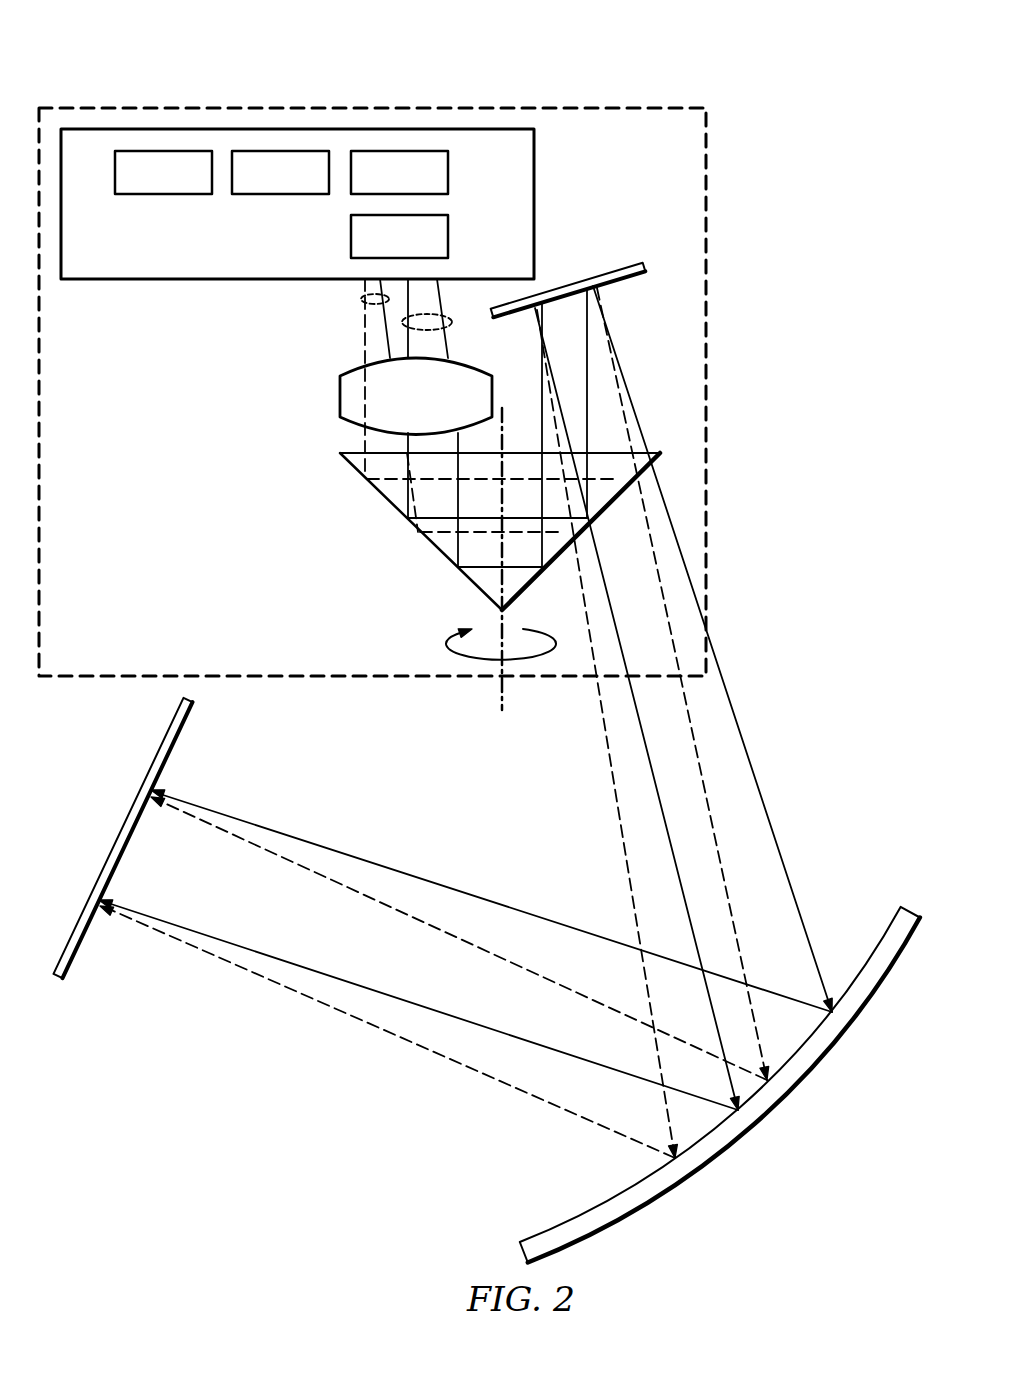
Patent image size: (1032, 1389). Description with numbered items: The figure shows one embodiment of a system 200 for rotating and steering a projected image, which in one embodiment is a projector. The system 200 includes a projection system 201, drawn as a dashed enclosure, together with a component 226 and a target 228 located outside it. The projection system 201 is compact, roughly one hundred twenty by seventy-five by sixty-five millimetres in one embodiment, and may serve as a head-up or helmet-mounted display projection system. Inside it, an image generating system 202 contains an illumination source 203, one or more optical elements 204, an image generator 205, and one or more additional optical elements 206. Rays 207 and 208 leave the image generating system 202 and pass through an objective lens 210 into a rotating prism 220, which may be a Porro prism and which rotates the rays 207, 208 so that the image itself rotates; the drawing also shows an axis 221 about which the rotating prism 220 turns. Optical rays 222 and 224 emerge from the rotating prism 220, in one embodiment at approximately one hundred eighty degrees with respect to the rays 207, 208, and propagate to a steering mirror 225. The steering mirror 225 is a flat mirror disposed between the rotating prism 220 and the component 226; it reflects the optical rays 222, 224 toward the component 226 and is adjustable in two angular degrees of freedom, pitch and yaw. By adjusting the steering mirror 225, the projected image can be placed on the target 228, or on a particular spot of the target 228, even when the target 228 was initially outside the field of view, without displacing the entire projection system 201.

The system 200 is at (295, 68).
The projection system 201 is at (708, 268).
The image generating system 202 is at (219, 281).
The illumination source 203 is at (159, 195).
The optical elements 204 is at (277, 195).
The image generator 205 is at (449, 171).
The additional optical elements 206 is at (449, 236).
The ray 207 is at (361, 299).
The ray 208 is at (402, 323).
The objective lens 210 is at (340, 393).
The rotating prism 220 is at (434, 550).
The rotation axis 221 is at (500, 690).
The optical ray 222 is at (549, 390).
The optical ray 224 is at (592, 368).
The steering mirror 225 is at (563, 283).
The component 226 is at (779, 1107).
The target 228 is at (121, 832).